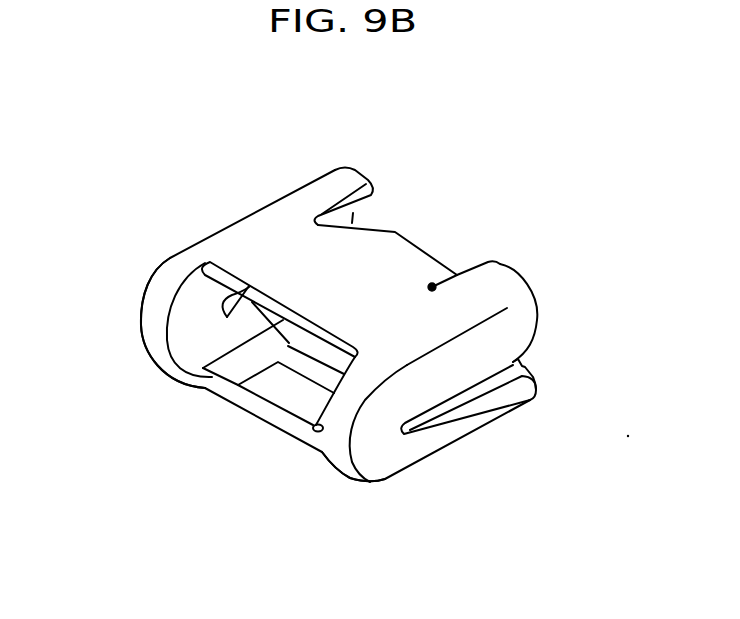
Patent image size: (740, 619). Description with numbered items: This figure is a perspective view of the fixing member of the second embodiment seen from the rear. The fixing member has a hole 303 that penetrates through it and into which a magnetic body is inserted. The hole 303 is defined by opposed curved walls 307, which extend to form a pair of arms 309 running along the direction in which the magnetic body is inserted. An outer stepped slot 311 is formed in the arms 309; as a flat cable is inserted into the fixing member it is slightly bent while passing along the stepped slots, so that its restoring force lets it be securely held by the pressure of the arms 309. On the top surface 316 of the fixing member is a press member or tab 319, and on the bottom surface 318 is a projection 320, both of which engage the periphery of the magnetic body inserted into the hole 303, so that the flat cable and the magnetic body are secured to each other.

The hole 303 is at (248, 357).
The curved walls 307 is at (158, 340).
The arms 309 is at (394, 457).
The outer stepped slot 311 is at (448, 408).
The top surface 316 is at (337, 287).
The bottom surface 318 is at (286, 352).
The tab 319 is at (408, 272).
The projection 320 is at (297, 400).